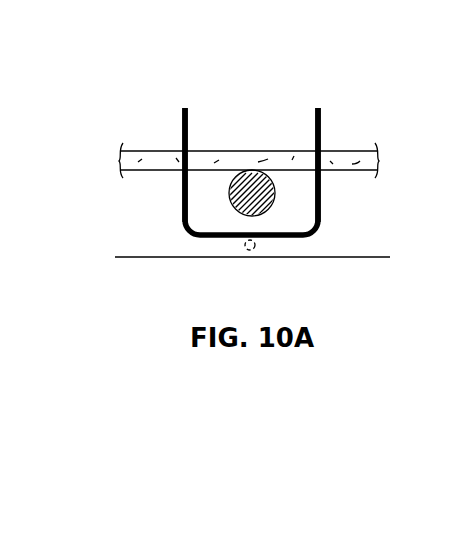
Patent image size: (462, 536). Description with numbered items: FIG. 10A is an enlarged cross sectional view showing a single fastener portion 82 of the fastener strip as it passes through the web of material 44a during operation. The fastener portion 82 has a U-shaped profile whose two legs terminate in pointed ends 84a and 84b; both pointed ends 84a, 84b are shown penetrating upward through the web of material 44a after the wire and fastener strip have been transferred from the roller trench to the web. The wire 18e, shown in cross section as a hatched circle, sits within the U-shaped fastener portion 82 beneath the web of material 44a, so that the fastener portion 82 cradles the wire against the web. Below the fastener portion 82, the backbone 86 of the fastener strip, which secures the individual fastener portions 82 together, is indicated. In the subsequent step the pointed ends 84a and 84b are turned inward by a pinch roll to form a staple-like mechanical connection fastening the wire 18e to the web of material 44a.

The fastener portion 82 is at (322, 216).
The pointed end 84a is at (185, 107).
The pointed end 84b is at (318, 107).
The web of material 44a is at (357, 150).
The wire 18e is at (229, 188).
The backbone 86 is at (250, 252).